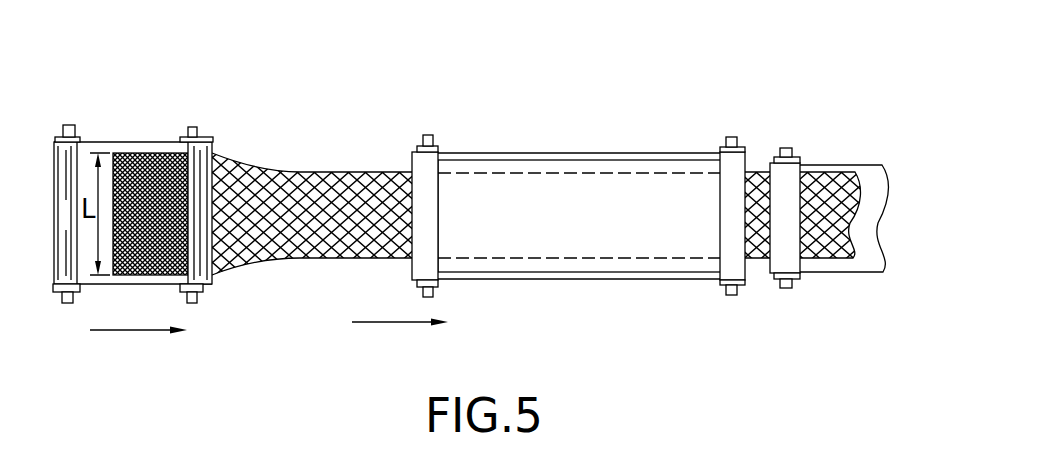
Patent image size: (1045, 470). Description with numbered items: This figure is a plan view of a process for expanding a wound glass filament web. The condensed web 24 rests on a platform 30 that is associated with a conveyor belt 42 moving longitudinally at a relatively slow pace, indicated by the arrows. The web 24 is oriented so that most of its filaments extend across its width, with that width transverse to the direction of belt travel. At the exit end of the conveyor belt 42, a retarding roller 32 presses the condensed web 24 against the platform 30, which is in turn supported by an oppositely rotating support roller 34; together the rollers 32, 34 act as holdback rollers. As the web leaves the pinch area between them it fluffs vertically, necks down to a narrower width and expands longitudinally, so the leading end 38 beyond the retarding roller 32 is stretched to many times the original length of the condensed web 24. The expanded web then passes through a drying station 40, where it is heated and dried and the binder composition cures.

The condensed web 24 is at (145, 165).
The platform 30 is at (87, 292).
The retarding roller 32 is at (206, 132).
The support roller 34 is at (195, 303).
The leading end 38 is at (857, 222).
The drying station 40 is at (578, 183).
The conveyor belt 42 is at (623, 280).